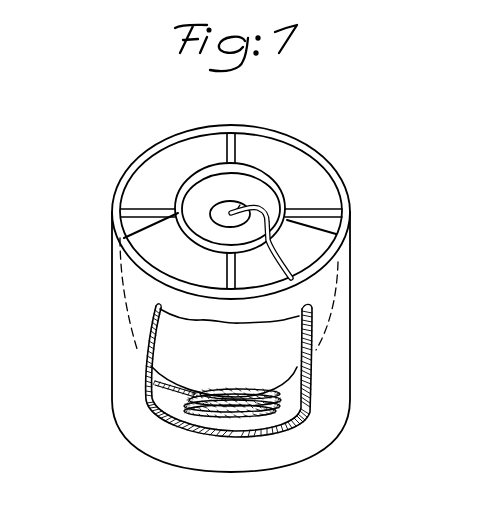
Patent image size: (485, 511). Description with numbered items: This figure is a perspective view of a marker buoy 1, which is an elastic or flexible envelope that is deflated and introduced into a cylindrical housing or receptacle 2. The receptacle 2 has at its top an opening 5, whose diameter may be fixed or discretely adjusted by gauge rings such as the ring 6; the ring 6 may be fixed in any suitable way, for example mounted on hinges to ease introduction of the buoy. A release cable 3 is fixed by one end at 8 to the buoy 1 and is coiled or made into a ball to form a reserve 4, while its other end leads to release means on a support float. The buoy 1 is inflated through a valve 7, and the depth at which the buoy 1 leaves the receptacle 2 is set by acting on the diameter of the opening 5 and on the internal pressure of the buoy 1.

The marker buoy 1 is at (173, 340).
The receptacle 2 is at (343, 352).
The release cable 3 is at (323, 258).
The reserve 4 is at (200, 410).
The opening 5 is at (282, 197).
The ring 6 is at (182, 200).
The valve 7 is at (238, 200).
The fixing point of the cable to the buoy 8 is at (212, 205).